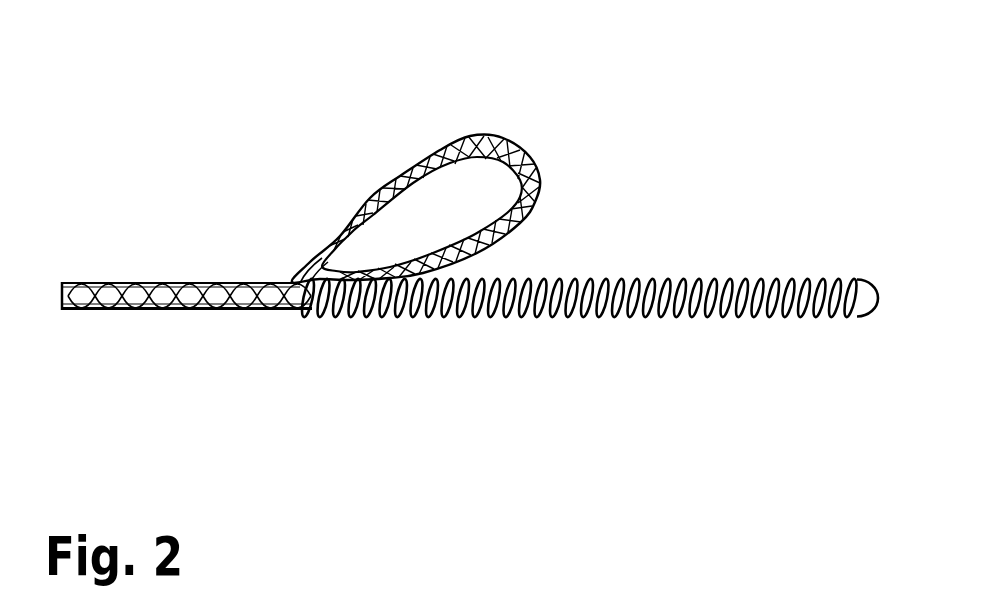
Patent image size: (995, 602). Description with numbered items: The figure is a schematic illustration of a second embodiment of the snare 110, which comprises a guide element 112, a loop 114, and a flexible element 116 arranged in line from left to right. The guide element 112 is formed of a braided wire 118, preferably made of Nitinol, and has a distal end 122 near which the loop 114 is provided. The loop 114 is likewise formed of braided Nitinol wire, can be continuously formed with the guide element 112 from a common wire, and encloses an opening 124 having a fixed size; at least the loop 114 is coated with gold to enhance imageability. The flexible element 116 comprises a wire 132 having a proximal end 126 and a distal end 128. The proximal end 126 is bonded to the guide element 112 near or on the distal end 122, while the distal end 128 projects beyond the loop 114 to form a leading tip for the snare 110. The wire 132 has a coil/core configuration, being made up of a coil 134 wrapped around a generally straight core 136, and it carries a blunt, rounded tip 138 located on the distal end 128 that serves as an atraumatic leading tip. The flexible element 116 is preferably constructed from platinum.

The snare 110 is at (366, 35).
The guide element 112 is at (201, 283).
The loop 114 is at (530, 155).
The flexible element 116 is at (688, 280).
The braided wire 118 is at (177, 313).
The distal end 122 is at (318, 262).
The opening 124 is at (442, 211).
The proximal end 126 is at (312, 310).
The distal end 128 is at (843, 280).
The wire 132 is at (482, 397).
The coil 134 is at (520, 318).
The core 136 is at (558, 318).
The rounded tip 138 is at (878, 298).